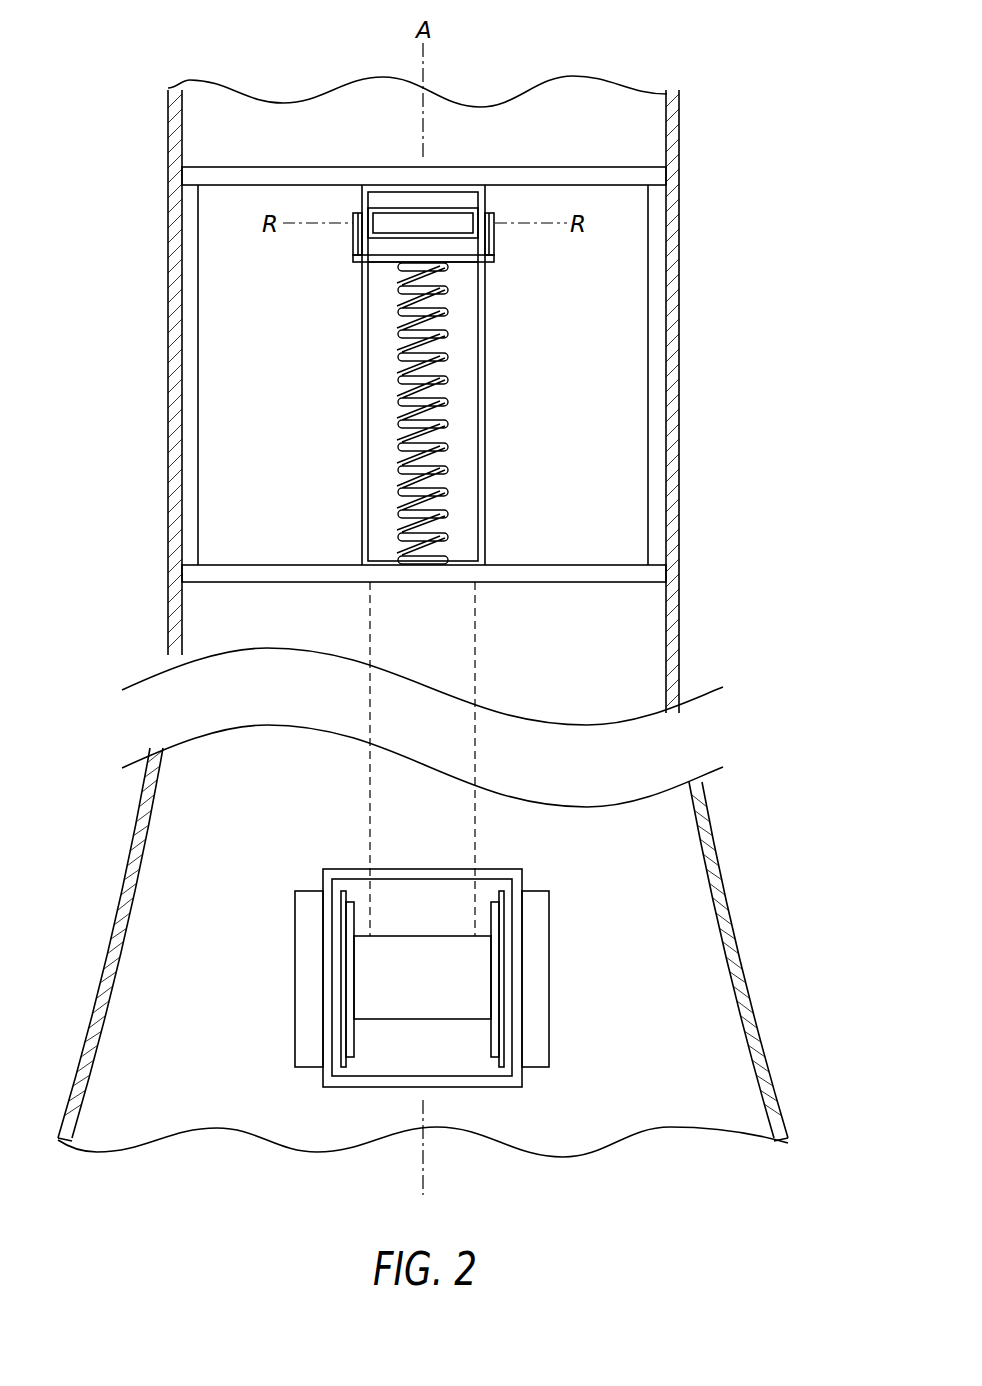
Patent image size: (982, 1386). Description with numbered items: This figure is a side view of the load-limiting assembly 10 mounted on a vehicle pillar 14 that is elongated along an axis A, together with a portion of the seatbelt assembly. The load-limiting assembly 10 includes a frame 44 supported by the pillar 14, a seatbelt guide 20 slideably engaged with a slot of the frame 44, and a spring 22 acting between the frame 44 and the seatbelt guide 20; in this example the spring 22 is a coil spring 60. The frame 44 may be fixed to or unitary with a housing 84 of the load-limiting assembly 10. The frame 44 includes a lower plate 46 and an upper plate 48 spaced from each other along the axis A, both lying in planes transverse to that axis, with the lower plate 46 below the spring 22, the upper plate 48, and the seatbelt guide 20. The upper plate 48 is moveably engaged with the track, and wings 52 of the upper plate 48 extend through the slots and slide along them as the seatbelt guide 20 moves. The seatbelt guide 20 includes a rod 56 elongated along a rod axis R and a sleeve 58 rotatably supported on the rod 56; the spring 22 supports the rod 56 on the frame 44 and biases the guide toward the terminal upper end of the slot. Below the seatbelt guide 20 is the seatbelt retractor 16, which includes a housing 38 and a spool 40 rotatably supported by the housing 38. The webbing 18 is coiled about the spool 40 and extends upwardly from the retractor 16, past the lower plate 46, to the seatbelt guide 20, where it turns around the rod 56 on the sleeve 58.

The load-limiting assembly 10 is at (762, 188).
The vehicle pillar 14 is at (167, 279).
The seatbelt retractor 16 is at (256, 1016).
The webbing 18 is at (477, 648).
The seatbelt guide 20 is at (495, 230).
The spring 22 is at (354, 413).
The coil spring 60 is at (400, 443).
The housing 38 is at (361, 1088).
The spool 40 is at (442, 995).
The frame 44 is at (223, 586).
The lower plate 46 is at (455, 557).
The upper plate 48 is at (393, 263).
The wings 52 is at (353, 248).
The rod 56 is at (352, 231).
The sleeve 58 is at (403, 222).
The housing 84 is at (595, 583).